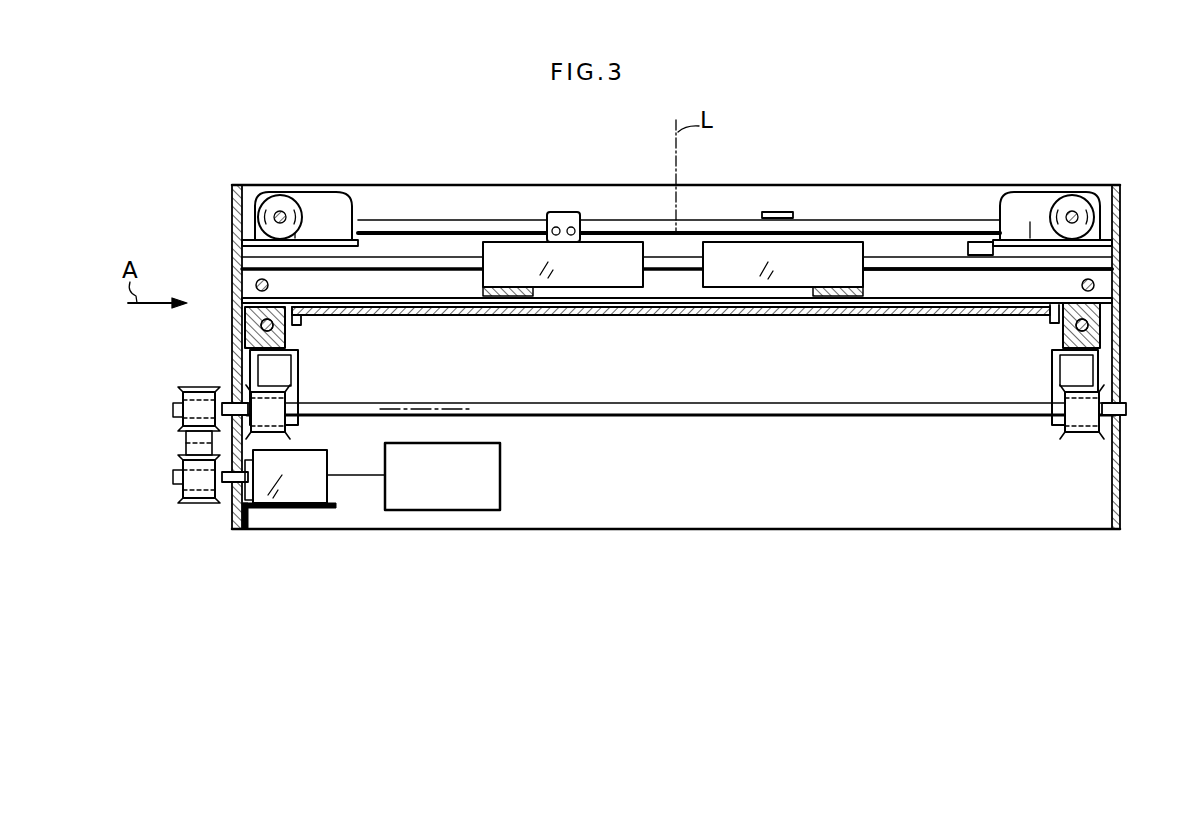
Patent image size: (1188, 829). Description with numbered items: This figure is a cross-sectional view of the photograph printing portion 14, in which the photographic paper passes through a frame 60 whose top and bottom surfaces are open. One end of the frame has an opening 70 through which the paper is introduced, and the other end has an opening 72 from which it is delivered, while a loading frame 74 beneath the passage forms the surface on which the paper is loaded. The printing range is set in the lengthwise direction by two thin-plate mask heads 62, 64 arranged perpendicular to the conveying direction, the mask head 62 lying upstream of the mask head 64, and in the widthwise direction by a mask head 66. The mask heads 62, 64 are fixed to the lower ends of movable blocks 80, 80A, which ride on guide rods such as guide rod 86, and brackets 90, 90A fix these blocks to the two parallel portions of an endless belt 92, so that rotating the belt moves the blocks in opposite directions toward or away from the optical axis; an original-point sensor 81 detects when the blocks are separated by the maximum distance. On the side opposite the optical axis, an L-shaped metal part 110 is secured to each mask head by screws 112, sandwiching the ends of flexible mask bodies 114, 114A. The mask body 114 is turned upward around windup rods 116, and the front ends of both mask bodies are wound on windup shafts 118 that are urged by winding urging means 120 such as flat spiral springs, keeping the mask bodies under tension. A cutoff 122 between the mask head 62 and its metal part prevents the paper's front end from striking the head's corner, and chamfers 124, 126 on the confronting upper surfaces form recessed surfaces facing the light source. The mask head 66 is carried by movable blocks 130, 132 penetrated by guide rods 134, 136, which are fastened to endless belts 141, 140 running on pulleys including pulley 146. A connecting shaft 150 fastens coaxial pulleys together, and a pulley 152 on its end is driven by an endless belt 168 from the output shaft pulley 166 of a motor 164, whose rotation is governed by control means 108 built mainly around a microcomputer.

The photograph printing portion 14 is at (1003, 168).
The frame 60 is at (687, 357).
The mask head in the lengthwise direction 62 is at (510, 290).
The mask head in the lengthwise direction 64 is at (820, 290).
The mask head in the widthwise direction 66 is at (686, 300).
The opening 70 is at (232, 272).
The opening 72 is at (1120, 298).
The loading frame 74 is at (607, 305).
The movable block 80 is at (625, 247).
The movable block 80A is at (720, 247).
The original-point sensor 81 is at (975, 243).
The guide rod 86 is at (956, 249).
The bracket 90 is at (568, 212).
The bracket 90A is at (782, 212).
The endless belt 92 is at (887, 231).
The control means 108 is at (488, 444).
The L-shaped metal part 110 is at (486, 290).
The screws 112 is at (498, 288).
The mask body 114 is at (394, 291).
The mask body 114A is at (937, 296).
The windup rods 116 is at (268, 285).
The windup shafts 118 is at (281, 214).
The winding urging means 120 is at (352, 212).
The cutoff 122 is at (488, 300).
The chamfer 124 is at (545, 290).
The chamfer 126 is at (803, 288).
The movable block 130 is at (230, 336).
The movable block 132 is at (1120, 335).
The guide rod 134 is at (260, 326).
The guide rod 136 is at (1100, 318).
The endless belt 140 is at (1080, 440).
The endless belt 141 is at (270, 360).
The pulley 146 is at (290, 392).
The connecting shaft 150 is at (680, 401).
The pulley 152 is at (215, 390).
The motor 164 is at (306, 453).
The output shaft pulley 166 is at (213, 498).
The endless belt 168 is at (195, 445).